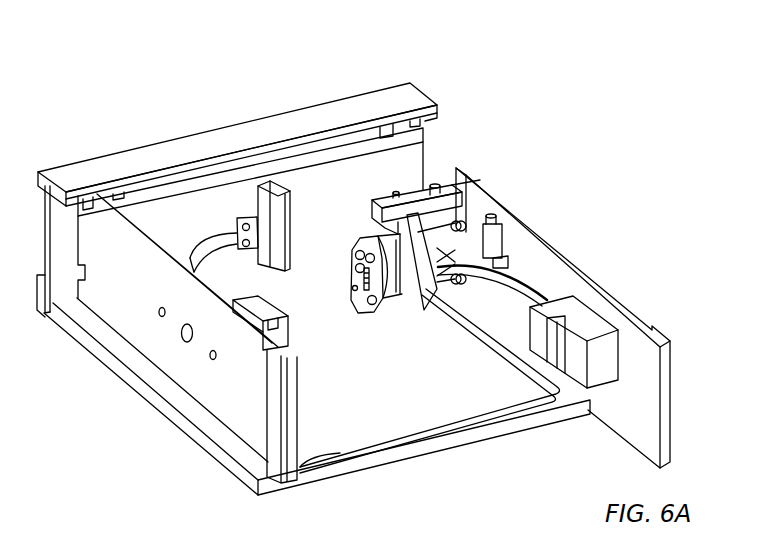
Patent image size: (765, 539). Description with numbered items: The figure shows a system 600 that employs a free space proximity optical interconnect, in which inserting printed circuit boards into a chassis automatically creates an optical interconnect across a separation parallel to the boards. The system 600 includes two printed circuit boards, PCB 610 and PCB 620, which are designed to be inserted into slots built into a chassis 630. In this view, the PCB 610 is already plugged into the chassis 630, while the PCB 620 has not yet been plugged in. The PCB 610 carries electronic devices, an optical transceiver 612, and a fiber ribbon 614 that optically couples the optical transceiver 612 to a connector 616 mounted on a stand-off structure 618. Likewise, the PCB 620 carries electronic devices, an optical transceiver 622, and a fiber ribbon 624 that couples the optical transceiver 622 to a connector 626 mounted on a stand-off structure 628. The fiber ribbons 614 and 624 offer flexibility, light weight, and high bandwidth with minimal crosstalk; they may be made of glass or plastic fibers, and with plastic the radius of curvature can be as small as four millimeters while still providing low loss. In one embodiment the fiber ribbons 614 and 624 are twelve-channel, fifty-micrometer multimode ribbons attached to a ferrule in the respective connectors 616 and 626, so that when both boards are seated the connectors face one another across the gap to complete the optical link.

The system 600 is at (136, 98).
The PCB 610 is at (268, 410).
The optical transceiver 612 is at (289, 320).
The fiber ribbon 614 is at (210, 238).
The connector 616 is at (280, 238).
The stand-off structure 618 is at (223, 197).
The PCB 620 is at (605, 292).
The optical transceiver 622 is at (605, 372).
The fiber ribbon 624 is at (523, 287).
The connector 626 is at (382, 298).
The stand-off structure 628 is at (398, 190).
The chassis 630 is at (384, 413).